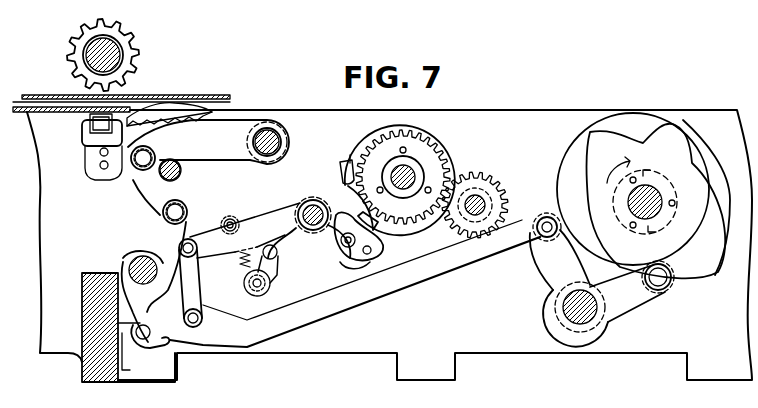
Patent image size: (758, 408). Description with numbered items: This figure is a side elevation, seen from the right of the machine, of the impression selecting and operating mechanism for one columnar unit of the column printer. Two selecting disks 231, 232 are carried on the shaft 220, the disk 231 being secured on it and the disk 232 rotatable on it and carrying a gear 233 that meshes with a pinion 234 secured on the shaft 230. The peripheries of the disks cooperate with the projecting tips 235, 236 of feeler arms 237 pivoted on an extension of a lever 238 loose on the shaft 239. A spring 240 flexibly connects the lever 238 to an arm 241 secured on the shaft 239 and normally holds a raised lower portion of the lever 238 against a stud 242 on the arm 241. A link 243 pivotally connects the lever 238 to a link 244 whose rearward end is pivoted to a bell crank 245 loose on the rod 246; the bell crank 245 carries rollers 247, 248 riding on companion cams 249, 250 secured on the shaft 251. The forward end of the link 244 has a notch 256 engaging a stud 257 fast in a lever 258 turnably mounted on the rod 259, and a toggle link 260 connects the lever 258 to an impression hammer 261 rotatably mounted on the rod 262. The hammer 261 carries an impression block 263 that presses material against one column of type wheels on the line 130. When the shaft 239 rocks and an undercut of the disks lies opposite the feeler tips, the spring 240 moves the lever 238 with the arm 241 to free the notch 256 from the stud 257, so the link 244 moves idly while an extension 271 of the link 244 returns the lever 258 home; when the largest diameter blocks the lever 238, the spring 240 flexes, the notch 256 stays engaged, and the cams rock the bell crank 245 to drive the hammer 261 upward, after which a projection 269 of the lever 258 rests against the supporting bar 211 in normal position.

The line of type wheels 130 is at (120, 58).
The impression block 263 is at (93, 117).
The rod 262 is at (282, 140).
The impression hammer 261 is at (202, 148).
The toggle link 260 is at (135, 188).
The lever 258 is at (158, 222).
The rod 259 is at (135, 258).
The supporting bar 211 is at (97, 272).
The notch 256 is at (118, 323).
The projection 269 is at (126, 368).
The stud 257 is at (173, 367).
The extension 271 is at (152, 302).
The link 244 is at (303, 320).
The lever 238 is at (242, 222).
The spring 240 is at (228, 262).
The link 243 is at (198, 283).
The stud 242 is at (276, 290).
The arm 241 is at (247, 293).
The shaft 239 is at (300, 205).
The projecting tip 236 is at (335, 247).
The feeler arms 237 is at (353, 262).
The projecting tip 235 is at (383, 250).
The selecting disk 232 is at (340, 182).
The selecting disk 231 is at (348, 150).
The gear 233 is at (442, 155).
The shaft 220 is at (392, 165).
The shaft 230 is at (476, 200).
The pinion 234 is at (500, 190).
The roller 247 is at (547, 220).
The bell crank 245 is at (553, 267).
The rod 246 is at (560, 308).
The roller 248 is at (662, 290).
The companion cam 249 is at (702, 268).
The companion cam 250 is at (687, 168).
The shaft 251 is at (655, 215).